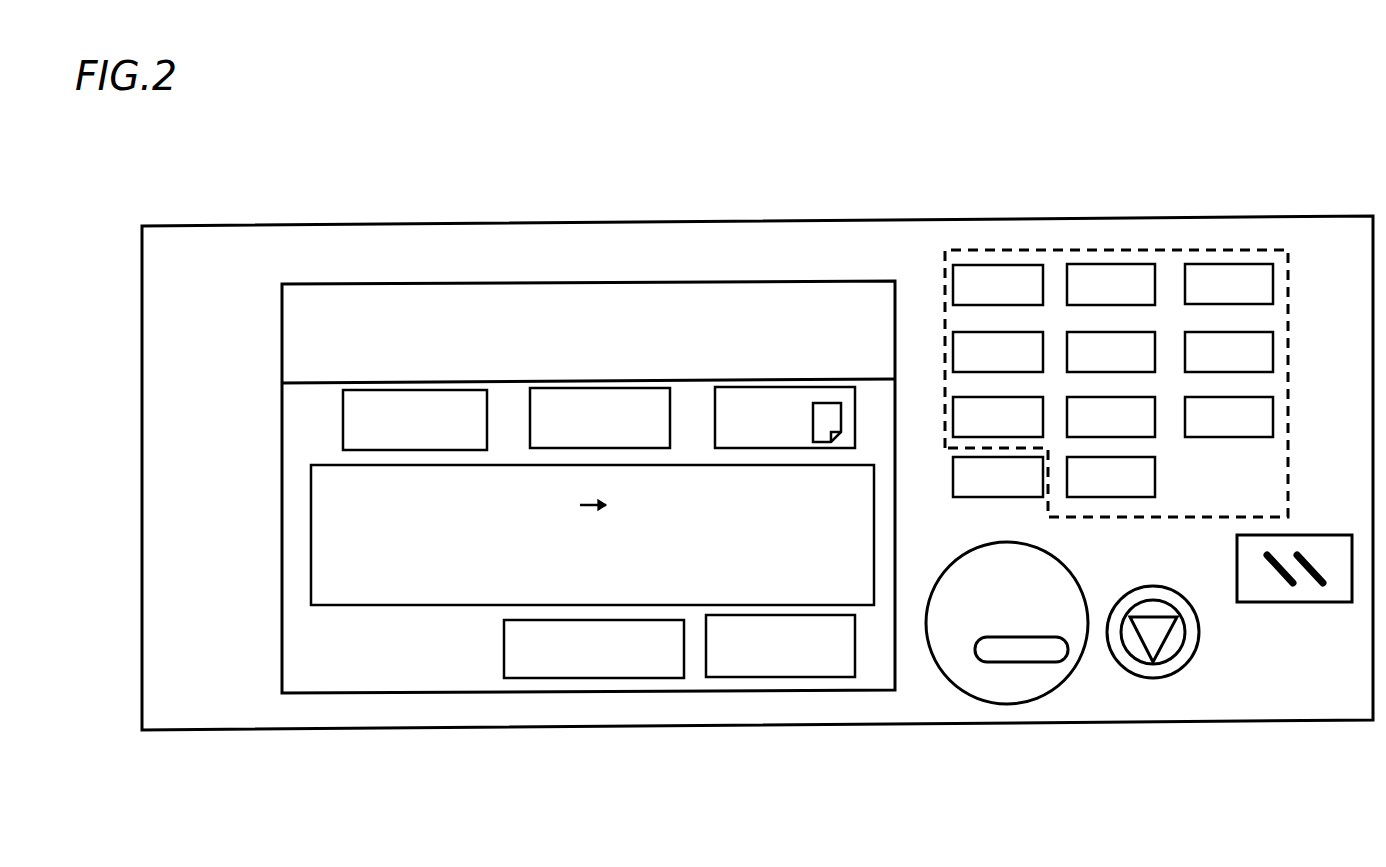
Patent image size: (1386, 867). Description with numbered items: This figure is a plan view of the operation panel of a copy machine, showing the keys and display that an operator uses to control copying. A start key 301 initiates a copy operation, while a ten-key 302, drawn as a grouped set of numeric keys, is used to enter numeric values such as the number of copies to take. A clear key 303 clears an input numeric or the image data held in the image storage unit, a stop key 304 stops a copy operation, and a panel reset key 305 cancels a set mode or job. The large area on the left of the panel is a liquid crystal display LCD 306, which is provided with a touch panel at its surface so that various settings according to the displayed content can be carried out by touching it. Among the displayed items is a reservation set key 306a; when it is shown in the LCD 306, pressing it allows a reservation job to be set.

The start key 301 is at (1007, 705).
The ten-key 302 is at (1119, 248).
The clear key 303 is at (940, 493).
The stop key 304 is at (1147, 677).
The panel reset key 305 is at (1312, 602).
The liquid crystal display LCD 306 is at (484, 282).
The reservation set key 306a is at (597, 678).